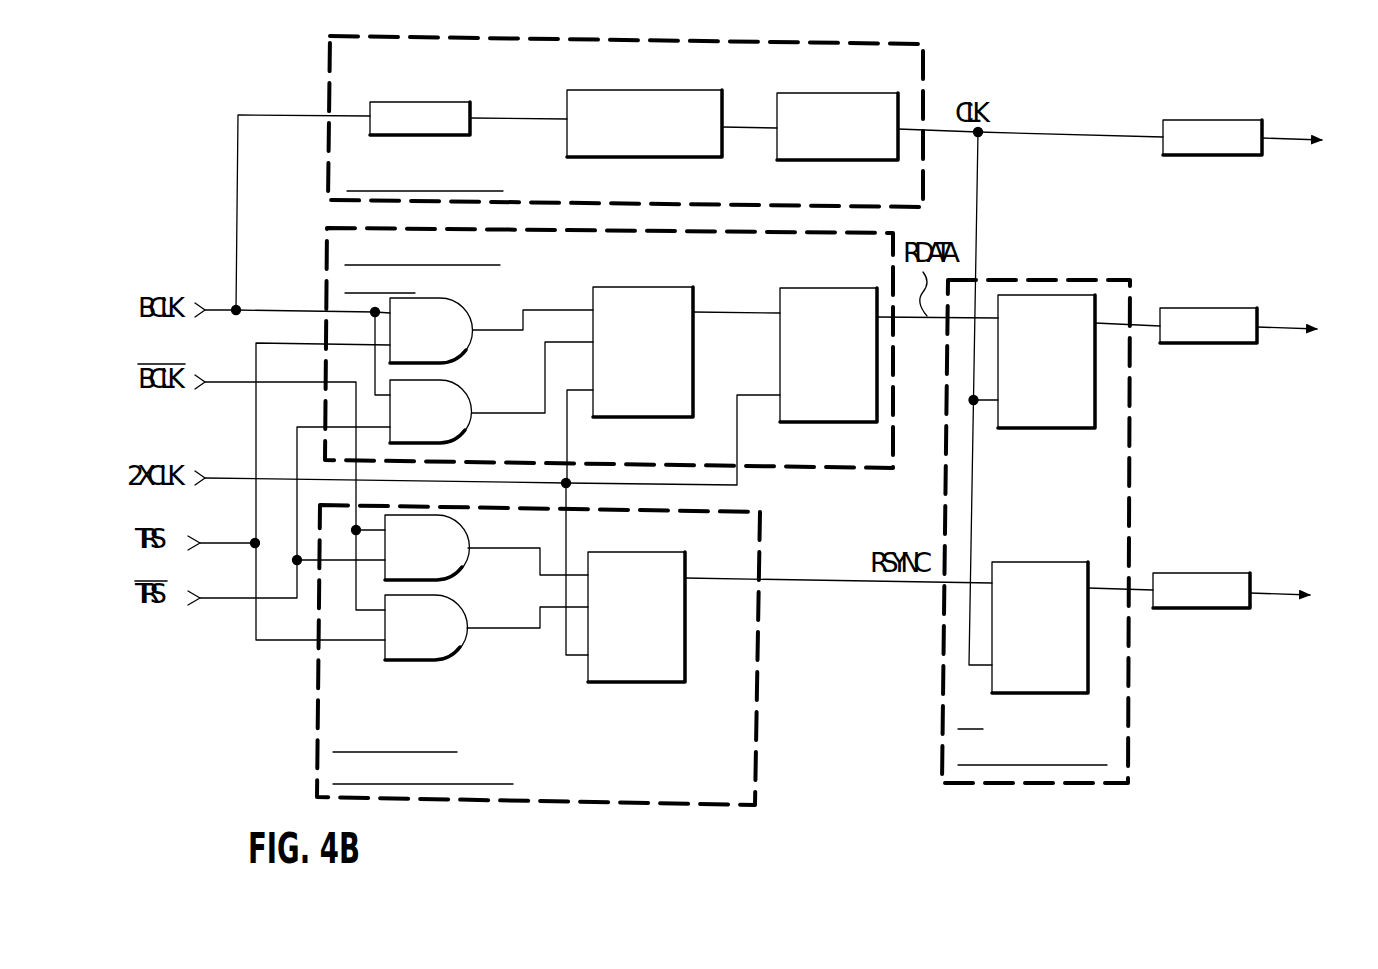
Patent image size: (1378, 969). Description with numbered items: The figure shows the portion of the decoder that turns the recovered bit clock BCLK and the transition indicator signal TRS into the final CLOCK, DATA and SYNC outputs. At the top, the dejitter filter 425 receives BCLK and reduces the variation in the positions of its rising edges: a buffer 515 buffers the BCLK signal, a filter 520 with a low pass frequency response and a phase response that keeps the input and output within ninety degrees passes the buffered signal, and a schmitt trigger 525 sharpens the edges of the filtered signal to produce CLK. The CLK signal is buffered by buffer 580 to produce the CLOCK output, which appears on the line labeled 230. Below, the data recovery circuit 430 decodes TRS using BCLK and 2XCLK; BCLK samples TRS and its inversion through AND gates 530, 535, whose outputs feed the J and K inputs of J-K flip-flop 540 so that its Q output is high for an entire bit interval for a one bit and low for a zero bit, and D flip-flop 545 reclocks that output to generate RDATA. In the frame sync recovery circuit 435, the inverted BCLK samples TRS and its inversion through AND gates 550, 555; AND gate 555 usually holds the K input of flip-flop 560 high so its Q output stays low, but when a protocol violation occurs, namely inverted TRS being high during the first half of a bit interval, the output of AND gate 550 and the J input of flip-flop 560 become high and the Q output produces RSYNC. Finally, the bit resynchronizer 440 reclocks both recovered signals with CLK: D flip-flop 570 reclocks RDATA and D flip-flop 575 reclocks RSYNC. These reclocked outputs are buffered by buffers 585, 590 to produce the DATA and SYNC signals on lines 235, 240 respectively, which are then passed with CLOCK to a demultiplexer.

The dejitter filter 425 is at (329, 148).
The buffer 515 is at (468, 101).
The filter 520 is at (693, 98).
The schmitt trigger 525 is at (888, 99).
The buffer 580 is at (1255, 120).
The clock output 230 is at (1290, 143).
The data recovery circuit 430 is at (327, 273).
The AND gate 530 is at (452, 345).
The AND gate 535 is at (452, 427).
The J-K flip-flop 540 is at (662, 410).
The D flip-flop 545 is at (815, 412).
The bit resynchronizer 440 is at (1120, 728).
The D flip-flop 570 is at (1035, 420).
The buffer 585 is at (1250, 308).
The line 235 is at (1288, 333).
The frame sync recovery circuit 435 is at (320, 753).
The AND gate 550 is at (448, 560).
The AND gate 555 is at (447, 643).
The flip-flop 560 is at (655, 673).
The D flip-flop 575 is at (1069, 563).
The buffer 590 is at (1245, 574).
The line 240 is at (1283, 598).